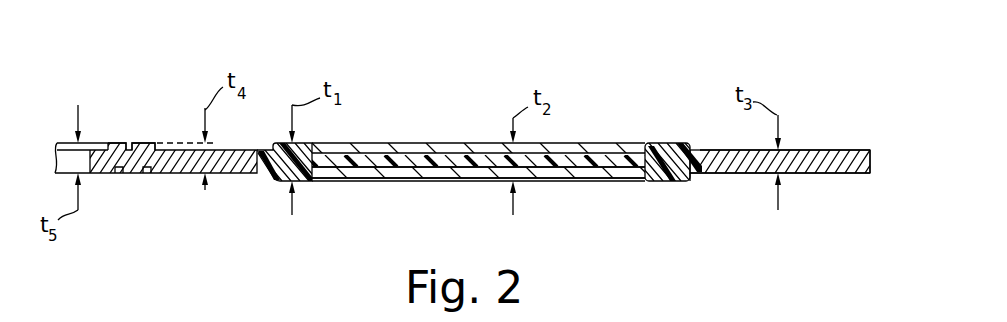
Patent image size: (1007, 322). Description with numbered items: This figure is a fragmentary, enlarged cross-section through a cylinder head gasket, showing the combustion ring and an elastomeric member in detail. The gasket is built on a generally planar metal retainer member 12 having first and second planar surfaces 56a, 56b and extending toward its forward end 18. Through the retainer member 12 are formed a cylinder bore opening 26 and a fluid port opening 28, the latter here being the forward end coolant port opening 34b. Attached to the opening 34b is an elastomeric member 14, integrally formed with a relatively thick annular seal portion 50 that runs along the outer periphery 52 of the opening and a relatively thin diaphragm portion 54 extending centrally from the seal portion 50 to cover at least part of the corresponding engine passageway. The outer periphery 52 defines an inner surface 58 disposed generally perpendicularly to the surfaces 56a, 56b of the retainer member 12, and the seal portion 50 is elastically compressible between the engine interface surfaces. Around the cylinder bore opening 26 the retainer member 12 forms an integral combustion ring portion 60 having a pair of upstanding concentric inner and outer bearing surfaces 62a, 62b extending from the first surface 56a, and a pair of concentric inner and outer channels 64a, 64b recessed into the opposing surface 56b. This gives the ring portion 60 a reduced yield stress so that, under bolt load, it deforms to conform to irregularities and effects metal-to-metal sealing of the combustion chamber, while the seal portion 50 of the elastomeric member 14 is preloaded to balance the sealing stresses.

The retainer member 12 is at (877, 150).
The elastomeric member 14 is at (412, 143).
The forward end 18 is at (882, 174).
The cylinder bore opening 26 is at (71, 90).
The fluid port opening 28 is at (518, 47).
The forward end coolant port opening 34b is at (585, 78).
The seal portion 50 is at (665, 142).
The outer periphery 52 is at (700, 143).
The diaphragm portion 54 is at (608, 172).
The first surface 56a is at (812, 150).
The second surface 56b is at (800, 173).
The inner surface 58 is at (692, 181).
The combustion ring portion 60 is at (147, 92).
The inner bearing surface 62a is at (118, 143).
The outer bearing surface 62b is at (152, 143).
The inner channel 64a is at (117, 174).
The outer channel 64b is at (148, 174).